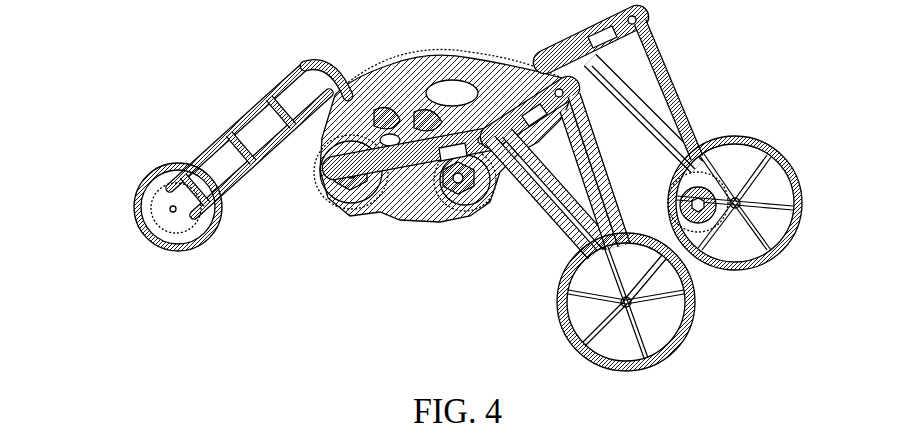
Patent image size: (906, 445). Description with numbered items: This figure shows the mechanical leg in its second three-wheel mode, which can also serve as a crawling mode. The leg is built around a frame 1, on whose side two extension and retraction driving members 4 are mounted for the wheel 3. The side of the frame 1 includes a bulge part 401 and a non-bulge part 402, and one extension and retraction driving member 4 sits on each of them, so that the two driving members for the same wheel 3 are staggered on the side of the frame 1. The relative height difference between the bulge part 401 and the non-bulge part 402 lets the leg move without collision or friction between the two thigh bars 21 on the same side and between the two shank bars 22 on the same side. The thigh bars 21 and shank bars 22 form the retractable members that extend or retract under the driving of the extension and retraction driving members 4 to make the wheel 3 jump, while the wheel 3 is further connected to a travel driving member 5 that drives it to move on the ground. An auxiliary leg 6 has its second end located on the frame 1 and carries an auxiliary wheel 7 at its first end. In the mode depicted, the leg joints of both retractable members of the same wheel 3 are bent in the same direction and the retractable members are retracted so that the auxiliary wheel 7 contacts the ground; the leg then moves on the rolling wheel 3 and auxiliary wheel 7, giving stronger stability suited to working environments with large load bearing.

The frame 1 is at (417, 66).
The wheel 3 is at (735, 271).
The extension and retraction driving member 4 is at (353, 205).
The travel driving member 5 is at (690, 209).
The auxiliary leg 6 is at (237, 139).
The auxiliary wheel 7 is at (172, 173).
The thigh bar 21 is at (527, 60).
The shank bar 22 is at (650, 52).
The bulge part 401 is at (393, 128).
The non-bulge part 402 is at (430, 127).